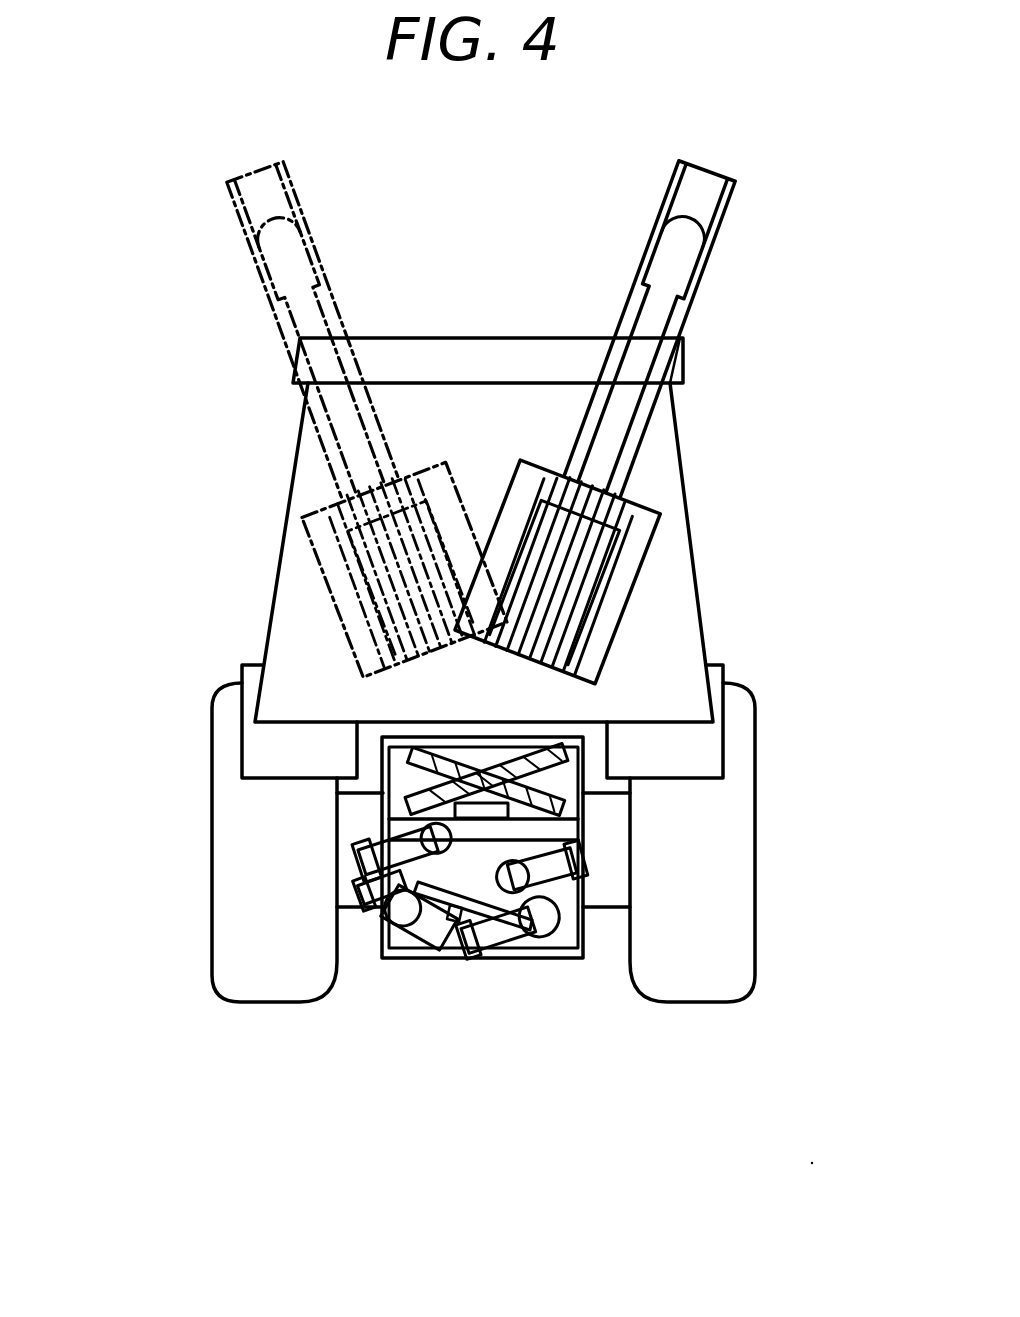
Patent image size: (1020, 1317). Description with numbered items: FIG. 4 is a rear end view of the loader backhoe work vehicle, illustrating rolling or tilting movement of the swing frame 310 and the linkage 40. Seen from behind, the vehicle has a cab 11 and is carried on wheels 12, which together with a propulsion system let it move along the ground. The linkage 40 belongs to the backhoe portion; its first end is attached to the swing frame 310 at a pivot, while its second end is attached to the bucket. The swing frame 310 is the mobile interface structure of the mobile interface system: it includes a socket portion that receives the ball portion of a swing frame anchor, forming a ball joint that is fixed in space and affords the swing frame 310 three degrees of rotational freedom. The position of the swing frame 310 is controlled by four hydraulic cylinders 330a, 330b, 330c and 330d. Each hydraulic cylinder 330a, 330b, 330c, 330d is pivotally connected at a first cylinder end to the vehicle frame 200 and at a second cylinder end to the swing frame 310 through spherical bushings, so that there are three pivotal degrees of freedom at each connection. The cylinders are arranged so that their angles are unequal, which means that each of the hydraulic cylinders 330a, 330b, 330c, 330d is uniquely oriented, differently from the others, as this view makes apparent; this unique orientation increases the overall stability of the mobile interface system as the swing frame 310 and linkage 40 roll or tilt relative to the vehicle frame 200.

The cab 11 is at (508, 328).
The wheels 12 is at (236, 990).
The linkage 40 is at (717, 162).
The vehicle frame 200 is at (481, 965).
The swing frame 310 is at (560, 785).
The hydraulic cylinder 330a is at (587, 908).
The hydraulic cylinder 330b is at (440, 840).
The hydraulic cylinder 330c is at (542, 958).
The hydraulic cylinder 330d is at (401, 953).